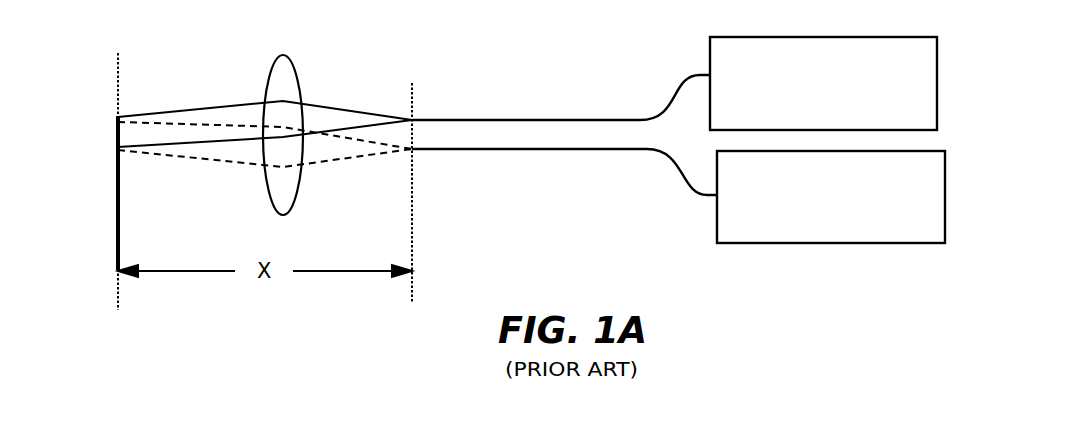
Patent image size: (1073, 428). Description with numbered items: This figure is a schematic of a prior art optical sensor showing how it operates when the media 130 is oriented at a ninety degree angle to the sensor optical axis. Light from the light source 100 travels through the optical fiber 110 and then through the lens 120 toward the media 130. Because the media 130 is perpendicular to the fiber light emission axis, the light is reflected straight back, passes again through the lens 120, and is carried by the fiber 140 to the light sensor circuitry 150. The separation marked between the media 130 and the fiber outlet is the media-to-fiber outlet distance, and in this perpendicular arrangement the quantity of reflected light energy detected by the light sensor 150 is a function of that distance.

The light source 100 is at (937, 75).
The optical fiber 110 is at (502, 120).
The lens 120 is at (297, 73).
The media 130 is at (118, 118).
The fiber 140 is at (537, 149).
The light sensor circuitry 150 is at (945, 195).